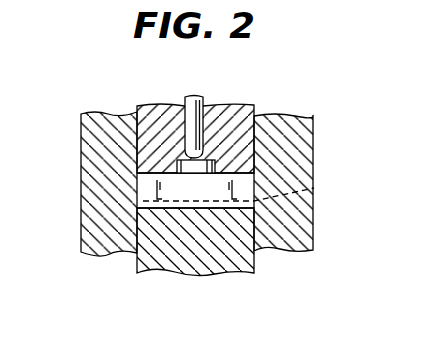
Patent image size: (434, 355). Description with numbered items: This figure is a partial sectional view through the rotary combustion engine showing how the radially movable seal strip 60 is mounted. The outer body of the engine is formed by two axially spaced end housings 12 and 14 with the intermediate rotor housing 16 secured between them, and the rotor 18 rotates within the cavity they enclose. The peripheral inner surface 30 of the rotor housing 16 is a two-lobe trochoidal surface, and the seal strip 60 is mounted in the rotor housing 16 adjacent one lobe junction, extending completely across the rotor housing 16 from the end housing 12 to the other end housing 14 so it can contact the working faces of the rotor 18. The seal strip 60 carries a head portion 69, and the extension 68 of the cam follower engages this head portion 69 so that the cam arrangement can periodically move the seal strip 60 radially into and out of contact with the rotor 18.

The end housing 12 is at (88, 150).
The end housing 14 is at (296, 143).
The rotor housing 16 is at (229, 118).
The rotor 18 is at (189, 268).
The peripheral inner surface 30 is at (314, 188).
The seal strip 60 is at (147, 185).
The extension 68 is at (189, 97).
The head portion 69 is at (192, 174).